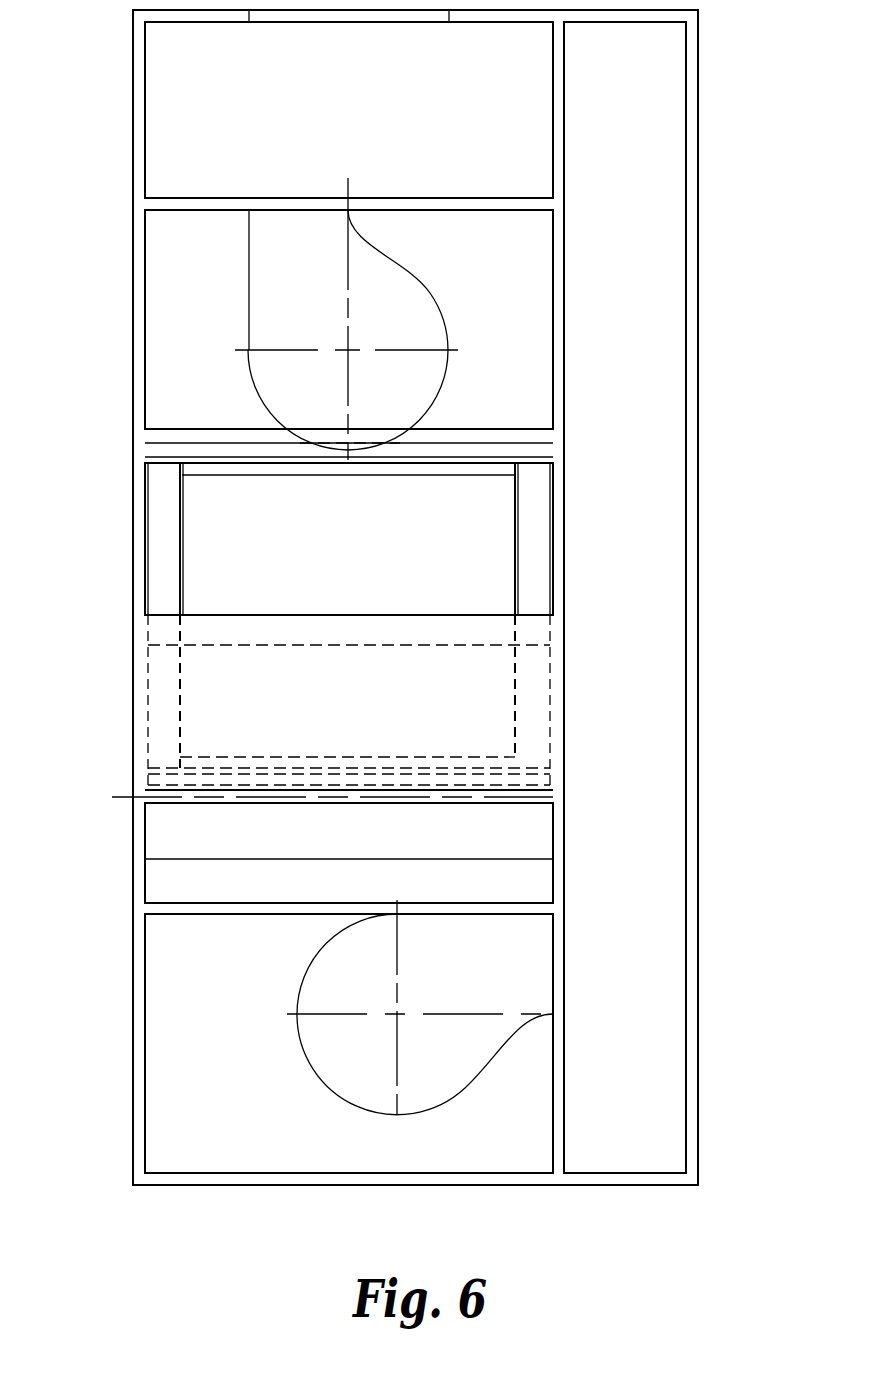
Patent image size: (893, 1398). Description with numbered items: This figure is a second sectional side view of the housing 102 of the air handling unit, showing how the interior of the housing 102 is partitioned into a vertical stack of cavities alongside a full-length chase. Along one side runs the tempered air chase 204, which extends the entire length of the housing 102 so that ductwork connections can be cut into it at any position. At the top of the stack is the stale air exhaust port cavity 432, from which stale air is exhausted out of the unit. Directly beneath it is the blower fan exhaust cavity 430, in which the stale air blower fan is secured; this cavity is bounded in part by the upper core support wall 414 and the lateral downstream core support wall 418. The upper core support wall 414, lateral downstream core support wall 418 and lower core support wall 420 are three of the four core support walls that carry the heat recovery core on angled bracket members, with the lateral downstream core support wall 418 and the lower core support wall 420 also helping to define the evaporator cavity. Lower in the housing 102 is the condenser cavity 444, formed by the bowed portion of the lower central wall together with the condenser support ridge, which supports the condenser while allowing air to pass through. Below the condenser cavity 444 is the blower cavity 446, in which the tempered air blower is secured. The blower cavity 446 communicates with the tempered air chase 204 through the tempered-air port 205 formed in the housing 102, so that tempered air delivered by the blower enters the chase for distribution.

The housing 102 is at (723, 233).
The tempered air chase 204 is at (663, 478).
The tempered-air port 205 is at (570, 959).
The upper core support wall 414 is at (162, 460).
The lateral downstream core support wall 418 is at (165, 615).
The lower core support wall 420 is at (163, 770).
The blower fan exhaust cavity 430 is at (170, 325).
The stale air exhaust port cavity 432 is at (172, 110).
The condenser cavity 444 is at (155, 838).
The blower cavity 446 is at (166, 1020).